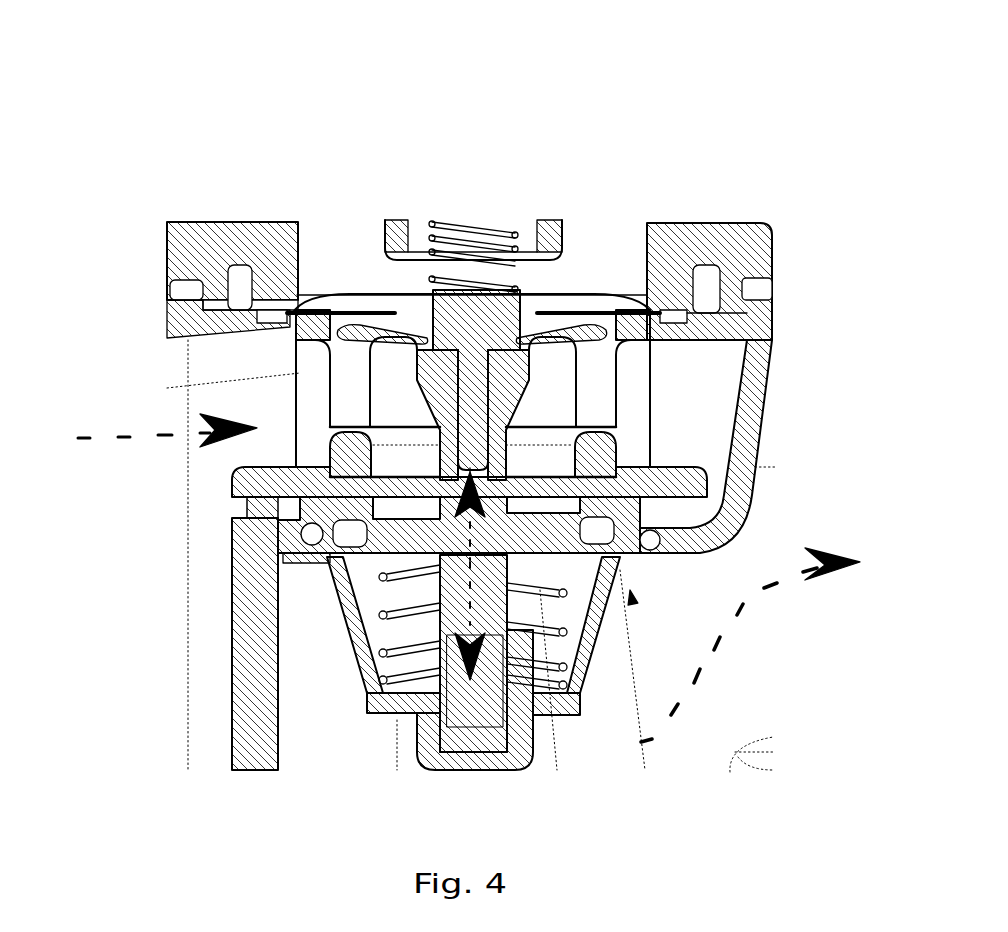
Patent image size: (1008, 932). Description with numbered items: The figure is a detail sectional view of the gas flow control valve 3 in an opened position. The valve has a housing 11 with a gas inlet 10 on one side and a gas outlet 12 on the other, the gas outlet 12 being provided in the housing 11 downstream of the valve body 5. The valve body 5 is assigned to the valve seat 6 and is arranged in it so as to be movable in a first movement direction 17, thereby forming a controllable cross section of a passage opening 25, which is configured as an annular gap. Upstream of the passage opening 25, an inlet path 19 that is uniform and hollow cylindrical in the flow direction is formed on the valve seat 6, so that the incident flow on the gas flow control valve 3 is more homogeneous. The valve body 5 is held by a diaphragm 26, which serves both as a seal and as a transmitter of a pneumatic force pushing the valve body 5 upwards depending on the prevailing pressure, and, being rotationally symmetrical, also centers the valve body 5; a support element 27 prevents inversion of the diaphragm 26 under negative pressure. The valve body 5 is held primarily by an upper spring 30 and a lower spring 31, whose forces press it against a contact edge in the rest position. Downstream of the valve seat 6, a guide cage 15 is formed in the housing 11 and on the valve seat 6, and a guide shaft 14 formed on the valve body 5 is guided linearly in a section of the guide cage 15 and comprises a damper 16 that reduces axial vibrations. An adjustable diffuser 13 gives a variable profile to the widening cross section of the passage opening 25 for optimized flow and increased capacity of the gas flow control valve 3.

The gas flow control valve 3 is at (197, 97).
The valve body 5 is at (580, 522).
The valve seat 6 is at (238, 491).
The gas inlet 10 is at (127, 433).
The housing 11 is at (762, 336).
The gas outlet 12 is at (738, 608).
The adjustable diffuser 13 is at (631, 594).
The guide shaft 14 is at (450, 675).
The guide cage 15 is at (341, 623).
The damper 16 is at (460, 740).
The first movement direction 17 is at (360, 560).
The inlet path 19 is at (587, 458).
The passage opening 25 is at (258, 520).
The diaphragm 26 is at (593, 295).
The support element 27 is at (665, 323).
The upper spring 30 is at (507, 285).
The lower spring 31 is at (560, 683).